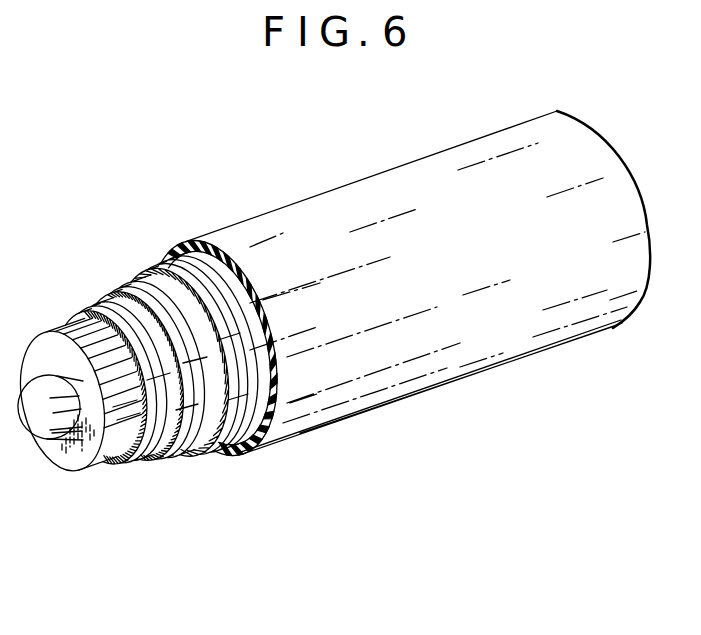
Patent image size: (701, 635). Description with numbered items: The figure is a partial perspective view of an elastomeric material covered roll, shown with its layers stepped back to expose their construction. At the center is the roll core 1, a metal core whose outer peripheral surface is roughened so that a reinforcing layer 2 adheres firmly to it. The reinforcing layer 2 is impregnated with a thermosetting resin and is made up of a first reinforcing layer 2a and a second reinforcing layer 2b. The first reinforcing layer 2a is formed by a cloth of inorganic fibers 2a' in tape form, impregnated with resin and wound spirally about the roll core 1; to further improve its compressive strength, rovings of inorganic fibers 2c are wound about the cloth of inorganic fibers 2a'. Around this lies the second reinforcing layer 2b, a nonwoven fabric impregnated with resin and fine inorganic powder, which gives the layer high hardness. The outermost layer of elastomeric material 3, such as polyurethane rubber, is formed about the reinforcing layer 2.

The roll core 1 is at (93, 455).
The reinforcing layer 2 is at (262, 563).
The first reinforcing layer 2a is at (136, 434).
The cloth of inorganic fibers 2a' is at (140, 407).
The rovings of inorganic fibers 2c is at (193, 455).
The second reinforcing layer 2b is at (227, 455).
The layer of elastomeric material 3 is at (448, 367).